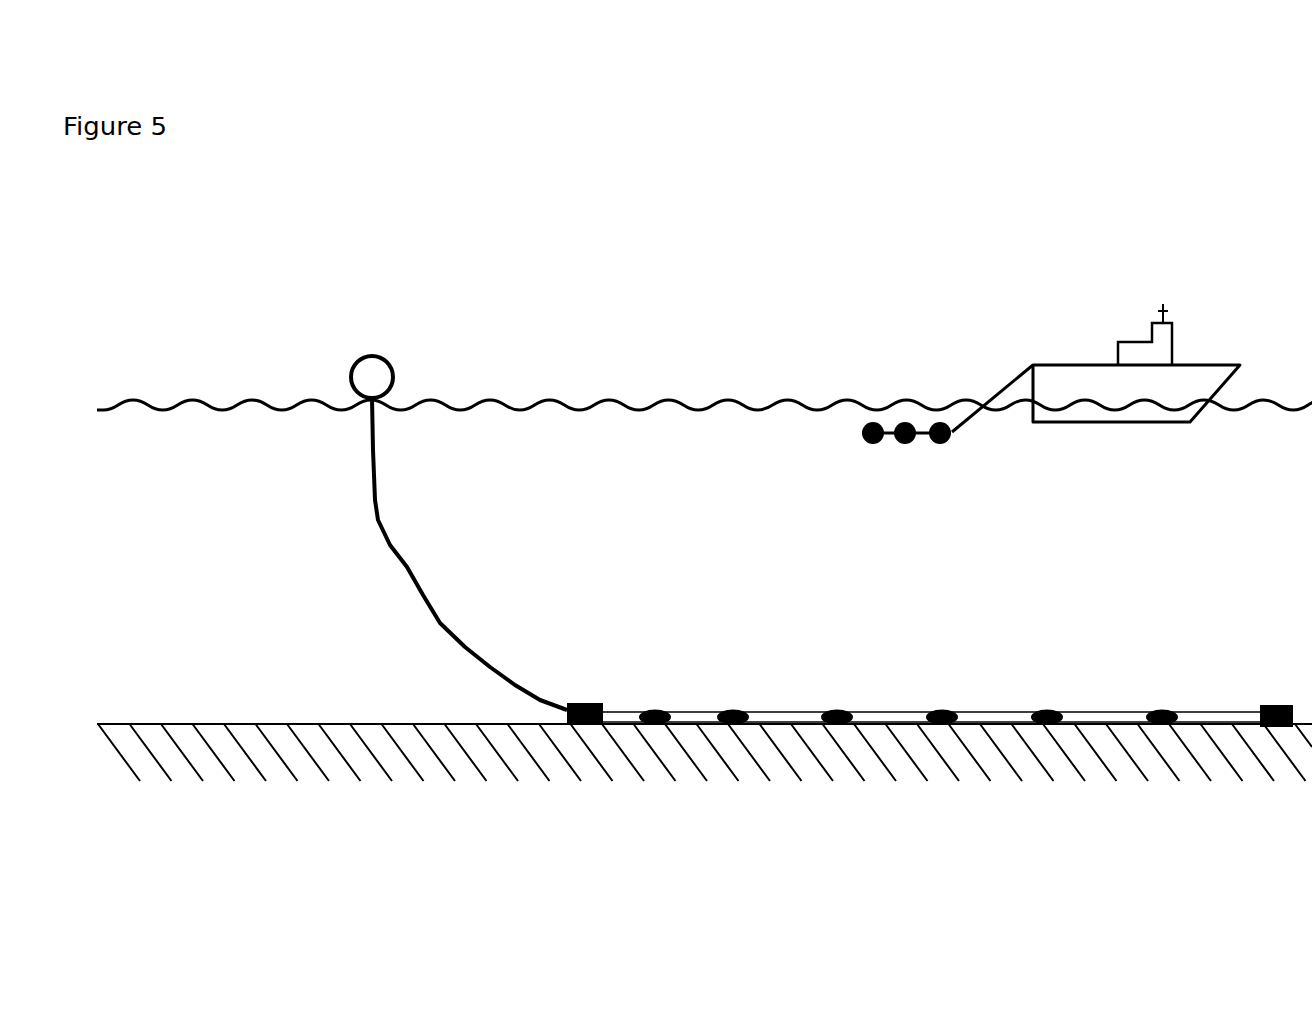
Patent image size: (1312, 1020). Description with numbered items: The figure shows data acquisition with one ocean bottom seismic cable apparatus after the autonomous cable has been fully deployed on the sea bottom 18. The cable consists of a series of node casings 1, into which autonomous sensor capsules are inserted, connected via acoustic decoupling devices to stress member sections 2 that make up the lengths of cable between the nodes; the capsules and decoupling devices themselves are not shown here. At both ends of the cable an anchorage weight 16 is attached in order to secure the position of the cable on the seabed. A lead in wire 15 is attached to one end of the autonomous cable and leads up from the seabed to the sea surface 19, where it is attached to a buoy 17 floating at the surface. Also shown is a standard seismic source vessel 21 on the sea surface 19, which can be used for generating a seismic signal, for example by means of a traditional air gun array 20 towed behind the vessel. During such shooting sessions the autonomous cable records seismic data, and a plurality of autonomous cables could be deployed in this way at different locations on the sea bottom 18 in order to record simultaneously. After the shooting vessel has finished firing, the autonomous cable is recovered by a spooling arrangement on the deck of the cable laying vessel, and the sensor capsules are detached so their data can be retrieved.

The node casings 1 is at (728, 707).
The stress member sections 2 is at (792, 707).
The lead in wire 15 is at (425, 580).
The anchorage weight 16 is at (577, 702).
The buoy 17 is at (400, 372).
The sea bottom 18 is at (233, 720).
The sea surface 19 is at (257, 398).
The air gun array 20 is at (903, 447).
The seismic source vessel 21 is at (1145, 427).